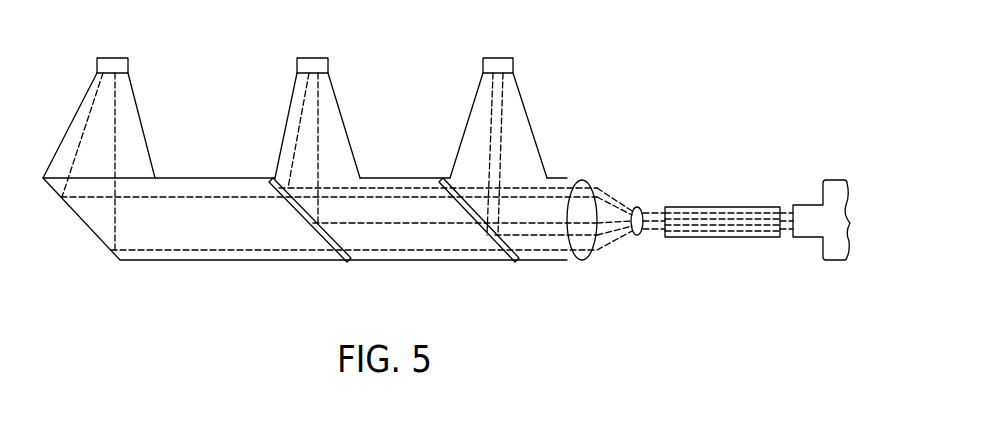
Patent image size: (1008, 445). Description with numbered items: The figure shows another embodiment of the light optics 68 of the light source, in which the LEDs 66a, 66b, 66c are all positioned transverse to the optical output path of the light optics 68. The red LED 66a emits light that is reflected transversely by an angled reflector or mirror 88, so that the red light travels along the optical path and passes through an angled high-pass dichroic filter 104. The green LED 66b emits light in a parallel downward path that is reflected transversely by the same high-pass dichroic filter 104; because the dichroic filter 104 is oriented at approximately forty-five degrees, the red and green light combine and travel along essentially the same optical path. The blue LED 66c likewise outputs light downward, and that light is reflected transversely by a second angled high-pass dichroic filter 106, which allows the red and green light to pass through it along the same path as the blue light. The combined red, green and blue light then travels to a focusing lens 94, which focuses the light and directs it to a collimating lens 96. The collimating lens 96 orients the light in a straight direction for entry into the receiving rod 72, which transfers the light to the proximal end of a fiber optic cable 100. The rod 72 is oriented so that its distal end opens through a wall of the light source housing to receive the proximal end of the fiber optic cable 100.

The red LED 66a is at (118, 66).
The green LED 66b is at (317, 66).
The blue LED 66c is at (500, 66).
The light optics 68 is at (690, 93).
The receiving rod 72 is at (700, 207).
The angled reflector or mirror 88 is at (95, 237).
The focusing lens 94 is at (592, 185).
The collimating lens 96 is at (638, 236).
The fiber optic cable 100 is at (837, 182).
The high-pass dichroic filter 104 is at (312, 232).
The high-pass dichroic filter 106 is at (485, 230).